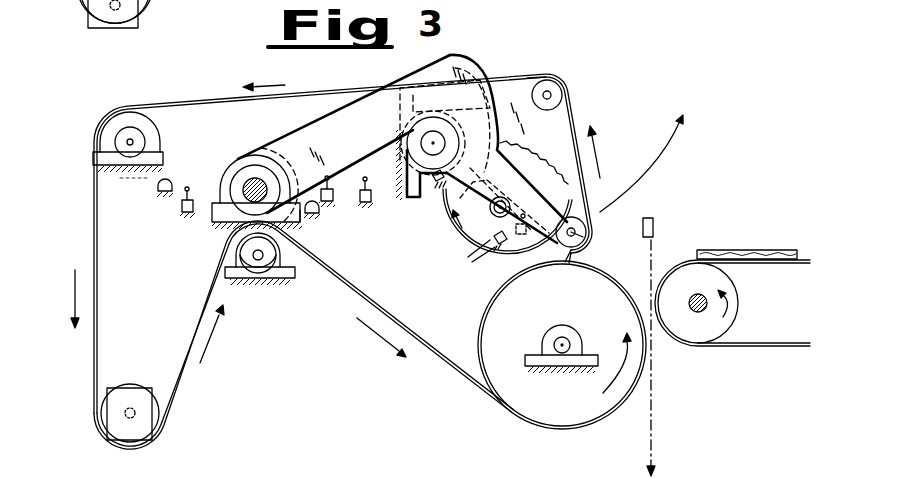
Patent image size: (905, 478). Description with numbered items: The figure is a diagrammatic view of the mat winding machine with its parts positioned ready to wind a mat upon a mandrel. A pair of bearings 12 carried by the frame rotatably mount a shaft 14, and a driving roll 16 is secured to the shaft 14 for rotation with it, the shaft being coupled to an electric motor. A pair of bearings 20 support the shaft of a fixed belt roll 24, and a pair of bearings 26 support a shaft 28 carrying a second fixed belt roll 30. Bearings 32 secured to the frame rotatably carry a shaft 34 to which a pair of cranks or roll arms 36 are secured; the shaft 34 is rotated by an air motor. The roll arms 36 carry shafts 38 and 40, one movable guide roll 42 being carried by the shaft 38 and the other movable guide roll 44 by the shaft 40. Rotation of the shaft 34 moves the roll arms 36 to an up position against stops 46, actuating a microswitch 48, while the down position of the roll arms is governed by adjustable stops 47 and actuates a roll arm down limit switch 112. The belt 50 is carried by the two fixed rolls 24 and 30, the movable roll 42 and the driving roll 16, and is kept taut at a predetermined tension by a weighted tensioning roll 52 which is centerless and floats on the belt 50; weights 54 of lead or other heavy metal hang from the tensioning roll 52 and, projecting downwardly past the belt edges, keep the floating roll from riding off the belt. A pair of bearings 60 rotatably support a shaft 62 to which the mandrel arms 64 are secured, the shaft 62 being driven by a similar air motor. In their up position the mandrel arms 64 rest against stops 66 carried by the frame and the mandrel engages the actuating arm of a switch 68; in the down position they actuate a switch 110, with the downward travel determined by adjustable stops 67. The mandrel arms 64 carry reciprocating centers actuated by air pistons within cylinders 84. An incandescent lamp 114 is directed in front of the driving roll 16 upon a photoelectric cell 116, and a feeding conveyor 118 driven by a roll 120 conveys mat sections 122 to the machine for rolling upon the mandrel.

The bearings 12 is at (578, 343).
The shaft 14 is at (560, 366).
The driving roll 16 is at (553, 430).
The bearings 20 is at (164, 179).
The fixed belt roll 24 is at (136, 118).
The bearings 26 is at (286, 281).
The shaft 28 is at (280, 216).
The second fixed belt roll 30 is at (256, 281).
The bearings 32 is at (401, 172).
The shaft 34 is at (426, 186).
The cranks or arms 36 is at (550, 130).
The shaft 38 is at (582, 240).
The shaft 40 is at (560, 95).
The movable guide roll 42 is at (588, 232).
The movable guide roll 44 is at (545, 78).
The stops 46 is at (316, 214).
The stops 47 is at (444, 190).
The microswitch 48 is at (368, 206).
The belt 50 is at (178, 378).
The weighted tensioning roll 52 is at (115, 38).
The weights 54 is at (100, 20).
The bearings 60 is at (222, 216).
The shaft 62 is at (255, 178).
The mandrel arms 64 is at (337, 128).
The stops 66 is at (170, 178).
The stops 67 is at (478, 262).
The switch 68 is at (186, 214).
The cylinders 84 is at (492, 247).
The switch 110 is at (333, 200).
The roll arm down limit switch 112 is at (518, 240).
The incandescent lamp 114 is at (655, 225).
The photoelectric cell 116 is at (655, 475).
The feeding conveyor 118 is at (790, 350).
The roll 120 is at (709, 340).
The mat sections 122 is at (760, 250).